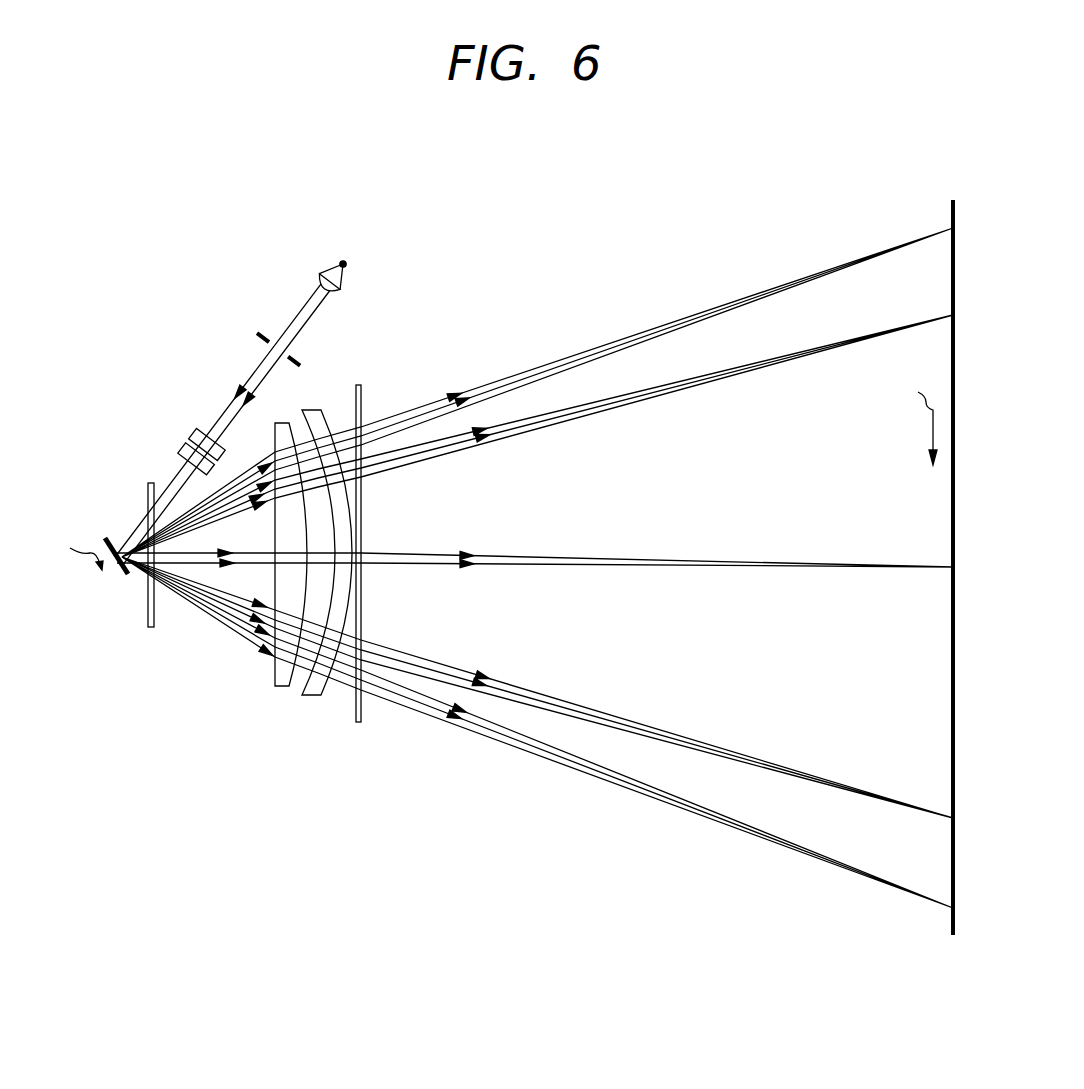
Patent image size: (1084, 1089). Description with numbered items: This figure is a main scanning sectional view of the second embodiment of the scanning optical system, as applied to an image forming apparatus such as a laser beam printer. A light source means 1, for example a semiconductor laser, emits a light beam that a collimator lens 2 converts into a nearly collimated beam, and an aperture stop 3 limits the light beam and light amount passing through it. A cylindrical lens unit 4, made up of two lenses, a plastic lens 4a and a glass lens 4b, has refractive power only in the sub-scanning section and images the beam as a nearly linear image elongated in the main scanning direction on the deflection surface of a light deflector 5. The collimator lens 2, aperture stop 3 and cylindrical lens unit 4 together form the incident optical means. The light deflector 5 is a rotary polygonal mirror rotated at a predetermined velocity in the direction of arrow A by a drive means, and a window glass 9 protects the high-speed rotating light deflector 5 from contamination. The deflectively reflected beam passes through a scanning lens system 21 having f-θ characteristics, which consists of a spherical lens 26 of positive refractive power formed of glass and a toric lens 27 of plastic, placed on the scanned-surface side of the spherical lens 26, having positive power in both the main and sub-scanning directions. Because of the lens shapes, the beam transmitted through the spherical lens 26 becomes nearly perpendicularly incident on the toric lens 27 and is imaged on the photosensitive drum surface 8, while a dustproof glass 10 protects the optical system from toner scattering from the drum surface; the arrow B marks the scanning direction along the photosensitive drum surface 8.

The light source means 1 is at (340, 260).
The collimator lens 2 is at (318, 280).
The aperture stop 3 is at (254, 331).
The cylindrical lens unit 4 is at (170, 418).
The plastic lens 4a is at (197, 430).
The glass lens 4b is at (184, 447).
The light deflector 5 is at (125, 575).
The photosensitive drum surface 8 is at (951, 212).
The window glass 9 is at (151, 630).
The dustproof glass 10 is at (358, 724).
The scanning lens system 21 is at (302, 605).
The spherical lens 26 is at (280, 688).
The toric lens 27 is at (309, 697).
The arrow A is at (86, 534).
The scanning direction B is at (919, 418).